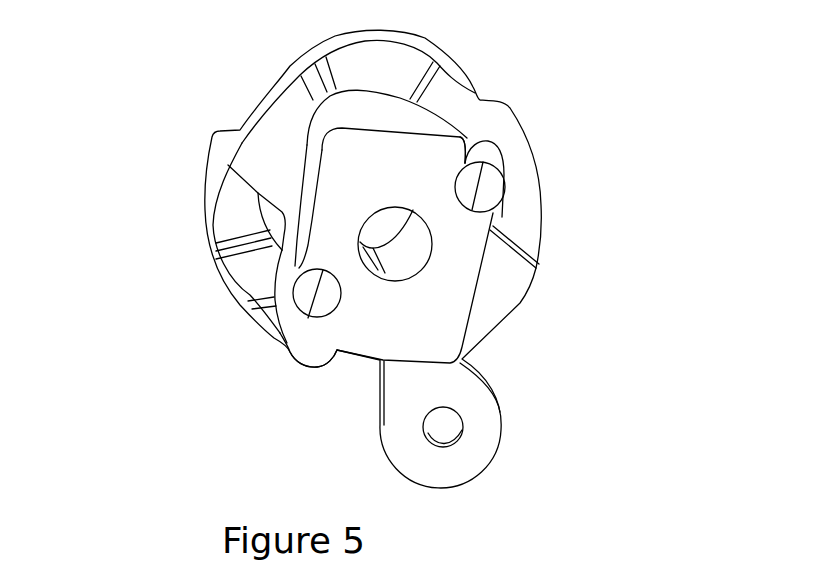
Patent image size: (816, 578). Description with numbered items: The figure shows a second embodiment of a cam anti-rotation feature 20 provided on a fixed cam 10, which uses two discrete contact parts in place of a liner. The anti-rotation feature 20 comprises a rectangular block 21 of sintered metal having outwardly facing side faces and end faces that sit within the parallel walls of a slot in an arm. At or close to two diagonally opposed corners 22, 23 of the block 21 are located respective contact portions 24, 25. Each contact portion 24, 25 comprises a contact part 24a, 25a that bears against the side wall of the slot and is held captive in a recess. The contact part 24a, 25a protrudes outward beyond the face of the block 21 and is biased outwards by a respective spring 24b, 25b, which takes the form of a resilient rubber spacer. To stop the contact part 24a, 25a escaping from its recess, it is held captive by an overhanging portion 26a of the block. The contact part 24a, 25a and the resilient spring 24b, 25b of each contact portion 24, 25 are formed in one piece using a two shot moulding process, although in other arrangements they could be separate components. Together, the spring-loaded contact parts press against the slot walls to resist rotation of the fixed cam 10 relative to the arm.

The fixed cam 10 is at (527, 321).
The anti-rotation feature 20 is at (259, 300).
The rectangular block 21 is at (481, 268).
The corner 22 is at (301, 325).
The corner 23 is at (503, 145).
The contact portion 24 is at (269, 276).
The contact part 24a is at (293, 305).
The spring 24b is at (323, 310).
The contact portion 25 is at (518, 178).
The contact part 25a is at (508, 170).
The spring 25b is at (493, 142).
The overhanging portion 26a is at (292, 272).